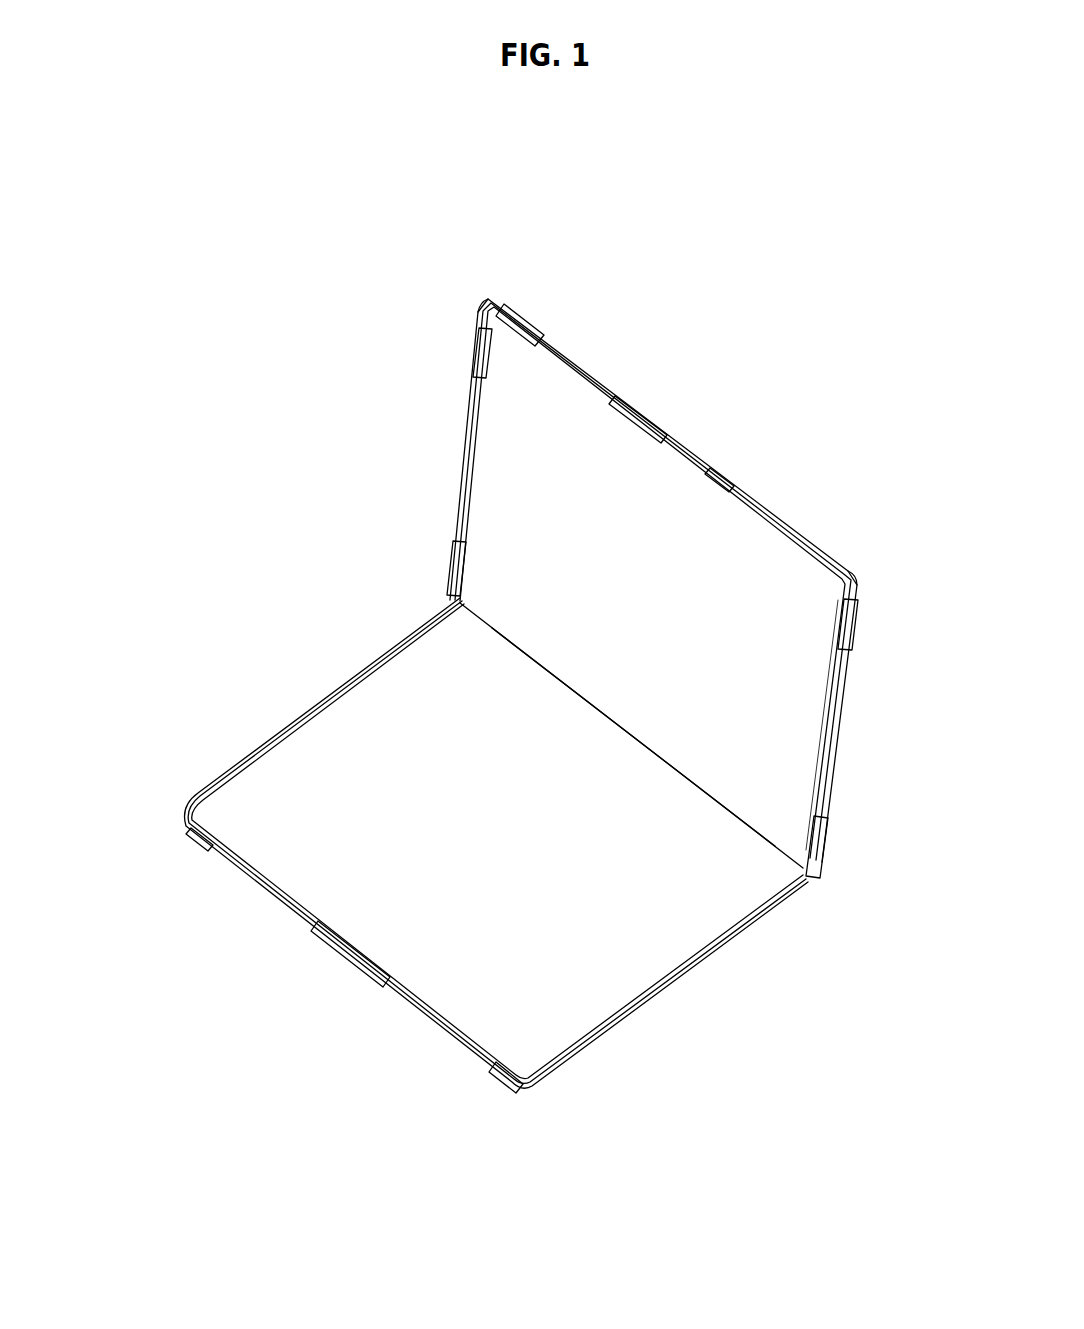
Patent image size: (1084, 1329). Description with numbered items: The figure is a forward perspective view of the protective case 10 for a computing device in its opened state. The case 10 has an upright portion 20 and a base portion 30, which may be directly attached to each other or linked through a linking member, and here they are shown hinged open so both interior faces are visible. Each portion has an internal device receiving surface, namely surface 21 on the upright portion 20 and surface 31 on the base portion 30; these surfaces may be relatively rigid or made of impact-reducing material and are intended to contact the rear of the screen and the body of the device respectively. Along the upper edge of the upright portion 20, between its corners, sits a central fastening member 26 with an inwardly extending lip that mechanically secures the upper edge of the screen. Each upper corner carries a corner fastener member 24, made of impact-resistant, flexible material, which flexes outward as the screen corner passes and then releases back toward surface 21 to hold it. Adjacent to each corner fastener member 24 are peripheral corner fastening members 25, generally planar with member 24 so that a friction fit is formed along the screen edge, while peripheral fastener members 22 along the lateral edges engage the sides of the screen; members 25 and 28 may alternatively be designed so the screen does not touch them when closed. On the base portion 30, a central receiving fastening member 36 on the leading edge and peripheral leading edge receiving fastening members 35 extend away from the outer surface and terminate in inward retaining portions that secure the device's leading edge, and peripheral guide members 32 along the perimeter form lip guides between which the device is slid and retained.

The case 10 is at (147, 290).
The upright portion 20 is at (647, 559).
The device receiving surface 21 is at (762, 552).
The peripheral fastener member 22 is at (465, 422).
The corner fastener member 24 is at (478, 305).
The peripheral corner fastening member 25 is at (525, 320).
The central fastening member 26 is at (668, 437).
The member 28 is at (452, 560).
The base portion 30 is at (450, 890).
The device receiving surface 31 is at (432, 665).
The peripheral guide member 32 is at (305, 706).
The peripheral leading edge receiving fastening member 35 is at (186, 838).
The central receiving fastening member 36 is at (328, 945).